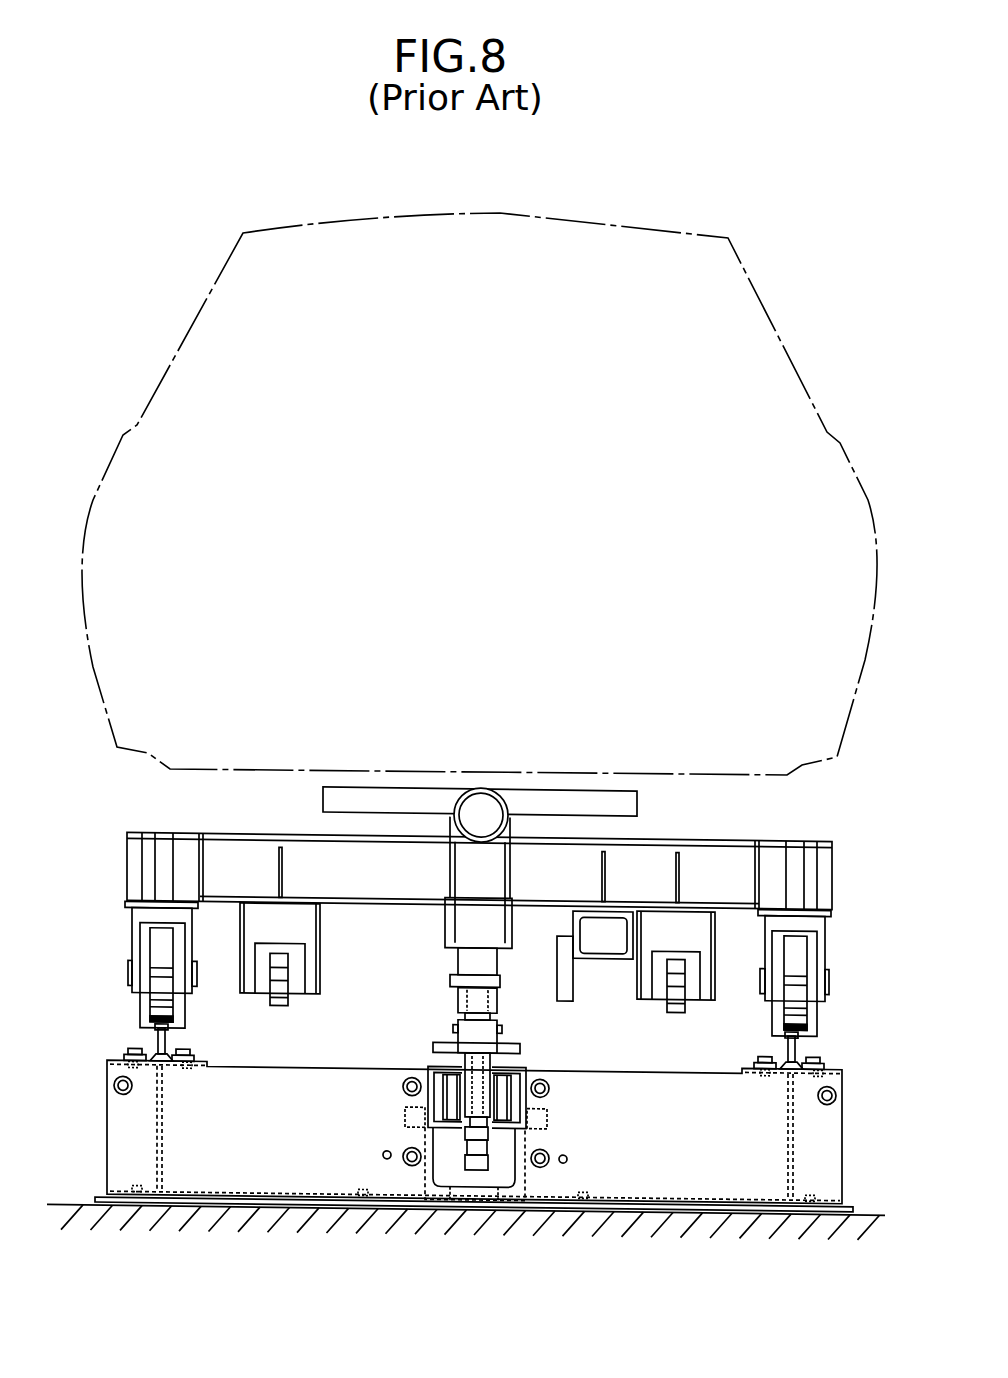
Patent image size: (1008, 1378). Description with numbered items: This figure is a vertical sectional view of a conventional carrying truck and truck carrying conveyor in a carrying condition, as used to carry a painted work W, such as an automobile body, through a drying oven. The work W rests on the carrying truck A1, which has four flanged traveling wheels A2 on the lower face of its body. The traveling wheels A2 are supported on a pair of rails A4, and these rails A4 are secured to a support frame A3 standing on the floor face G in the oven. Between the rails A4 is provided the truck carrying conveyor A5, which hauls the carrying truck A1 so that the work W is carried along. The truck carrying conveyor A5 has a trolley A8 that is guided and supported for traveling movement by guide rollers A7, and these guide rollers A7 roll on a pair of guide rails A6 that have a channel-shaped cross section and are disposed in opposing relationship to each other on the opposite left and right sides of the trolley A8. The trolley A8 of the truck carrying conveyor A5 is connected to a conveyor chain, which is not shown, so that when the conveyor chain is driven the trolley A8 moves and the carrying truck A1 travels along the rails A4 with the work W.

The work W is at (535, 218).
The carrying truck A1 is at (717, 837).
The flanged traveling wheels A2 is at (155, 1009).
The support frame A3 is at (822, 1130).
The rails A4 is at (155, 1032).
The truck carrying conveyor A5 is at (556, 1102).
The guide rails A6 is at (432, 1067).
The guide rollers A7 is at (444, 1095).
The trolley A8 is at (478, 1067).
The floor face G is at (857, 1213).